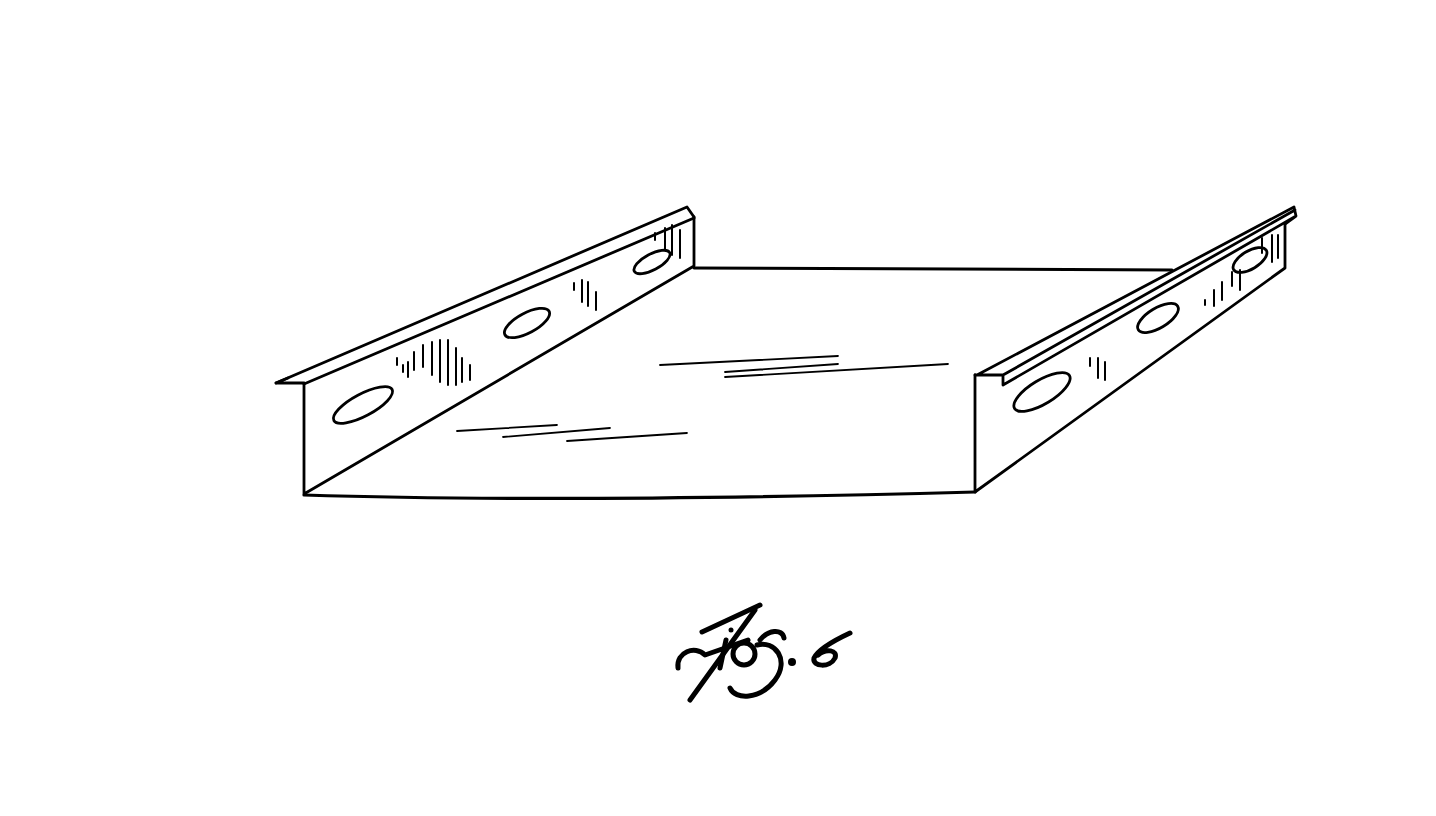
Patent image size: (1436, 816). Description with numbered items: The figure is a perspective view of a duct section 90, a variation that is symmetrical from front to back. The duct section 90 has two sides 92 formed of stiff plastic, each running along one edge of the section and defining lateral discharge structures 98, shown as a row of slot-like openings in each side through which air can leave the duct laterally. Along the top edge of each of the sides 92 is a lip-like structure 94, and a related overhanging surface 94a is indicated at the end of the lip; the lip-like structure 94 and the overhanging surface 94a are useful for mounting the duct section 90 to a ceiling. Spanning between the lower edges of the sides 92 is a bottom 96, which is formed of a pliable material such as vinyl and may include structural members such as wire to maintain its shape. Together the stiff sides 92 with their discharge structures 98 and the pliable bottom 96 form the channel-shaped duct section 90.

The duct section 90 is at (1210, 120).
The sides 92 is at (303, 462).
The lip-like structure 94 is at (510, 283).
The overhanging surface 94a is at (278, 383).
The bottom 96 is at (643, 500).
The lateral discharge structures 98 is at (388, 403).